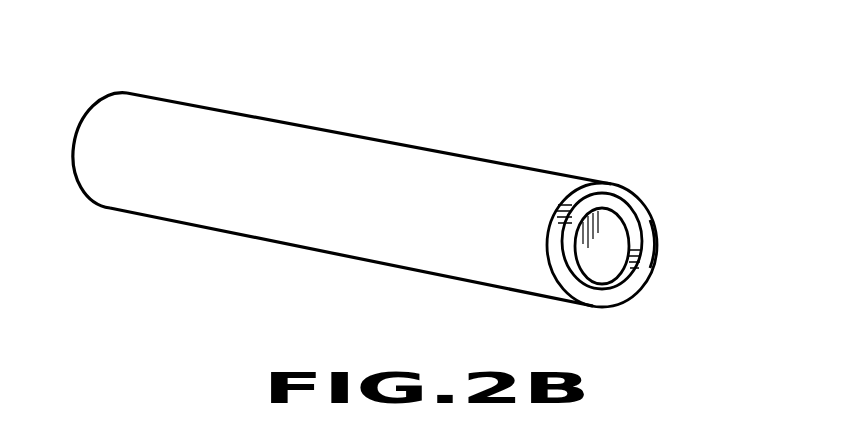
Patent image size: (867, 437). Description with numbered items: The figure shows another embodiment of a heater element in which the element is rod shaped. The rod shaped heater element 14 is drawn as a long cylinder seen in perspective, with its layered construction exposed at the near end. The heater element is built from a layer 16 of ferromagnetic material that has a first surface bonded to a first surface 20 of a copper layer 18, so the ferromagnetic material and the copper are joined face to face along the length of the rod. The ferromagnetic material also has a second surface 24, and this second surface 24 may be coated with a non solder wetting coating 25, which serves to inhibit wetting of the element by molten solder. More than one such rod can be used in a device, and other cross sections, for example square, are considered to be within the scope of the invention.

The heater element 14 is at (459, 149).
The layer of ferromagnetic material 16 is at (613, 290).
The copper layer 18 is at (615, 230).
The first surface of the copper layer 20 is at (622, 203).
The second surface of the ferromagnetic material 24 is at (598, 295).
The non solder wetting coating 25 is at (652, 245).